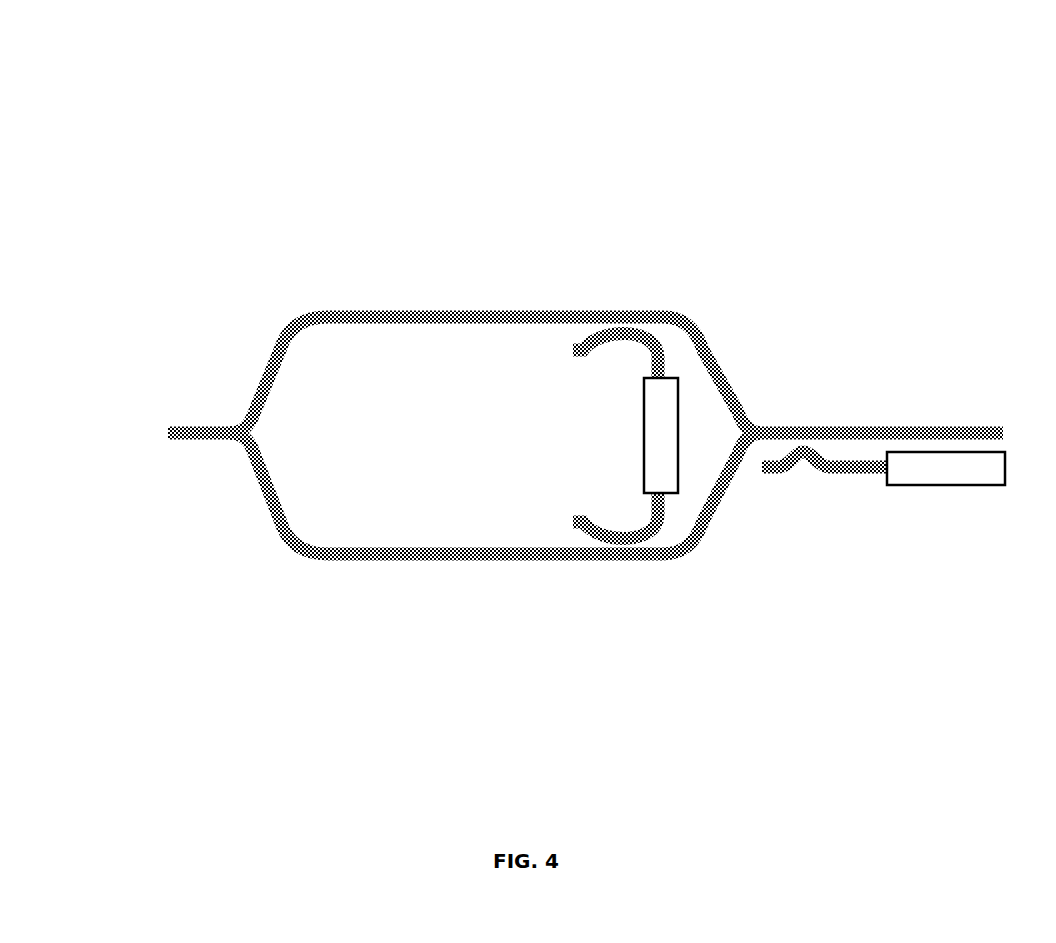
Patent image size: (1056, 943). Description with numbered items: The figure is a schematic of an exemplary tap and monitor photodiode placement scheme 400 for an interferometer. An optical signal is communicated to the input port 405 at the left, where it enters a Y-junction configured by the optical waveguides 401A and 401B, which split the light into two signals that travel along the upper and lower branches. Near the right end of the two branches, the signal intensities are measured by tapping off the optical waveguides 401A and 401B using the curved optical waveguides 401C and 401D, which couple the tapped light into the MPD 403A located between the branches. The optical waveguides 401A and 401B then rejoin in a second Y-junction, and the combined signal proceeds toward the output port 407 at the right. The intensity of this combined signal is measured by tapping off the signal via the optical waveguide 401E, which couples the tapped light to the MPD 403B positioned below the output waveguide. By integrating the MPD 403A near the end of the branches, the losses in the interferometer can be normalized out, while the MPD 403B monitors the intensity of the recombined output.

The optical device / Mach-Zehnder interferometer 400 is at (132, 87).
The optical waveguide 401A is at (410, 310).
The optical waveguide 401B is at (412, 561).
The optical waveguide 401C is at (590, 358).
The optical waveguide 401D is at (588, 514).
The optical waveguide 401E is at (792, 470).
The MPD 403A is at (661, 435).
The MPD 403B is at (946, 468).
The input port 405 is at (150, 418).
The output port 407 is at (892, 417).